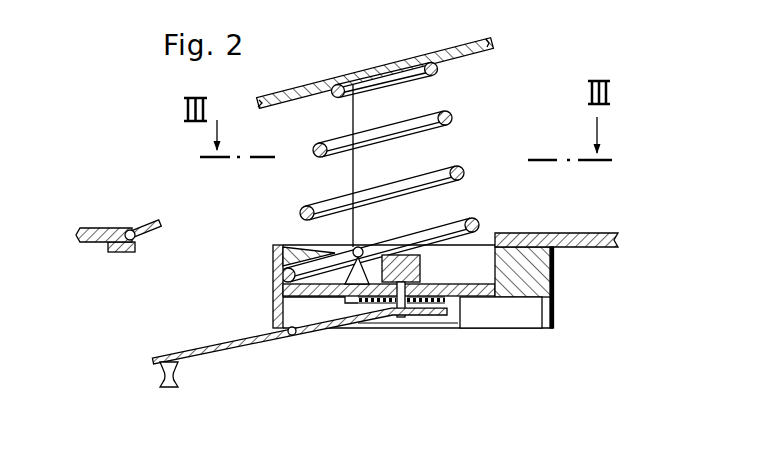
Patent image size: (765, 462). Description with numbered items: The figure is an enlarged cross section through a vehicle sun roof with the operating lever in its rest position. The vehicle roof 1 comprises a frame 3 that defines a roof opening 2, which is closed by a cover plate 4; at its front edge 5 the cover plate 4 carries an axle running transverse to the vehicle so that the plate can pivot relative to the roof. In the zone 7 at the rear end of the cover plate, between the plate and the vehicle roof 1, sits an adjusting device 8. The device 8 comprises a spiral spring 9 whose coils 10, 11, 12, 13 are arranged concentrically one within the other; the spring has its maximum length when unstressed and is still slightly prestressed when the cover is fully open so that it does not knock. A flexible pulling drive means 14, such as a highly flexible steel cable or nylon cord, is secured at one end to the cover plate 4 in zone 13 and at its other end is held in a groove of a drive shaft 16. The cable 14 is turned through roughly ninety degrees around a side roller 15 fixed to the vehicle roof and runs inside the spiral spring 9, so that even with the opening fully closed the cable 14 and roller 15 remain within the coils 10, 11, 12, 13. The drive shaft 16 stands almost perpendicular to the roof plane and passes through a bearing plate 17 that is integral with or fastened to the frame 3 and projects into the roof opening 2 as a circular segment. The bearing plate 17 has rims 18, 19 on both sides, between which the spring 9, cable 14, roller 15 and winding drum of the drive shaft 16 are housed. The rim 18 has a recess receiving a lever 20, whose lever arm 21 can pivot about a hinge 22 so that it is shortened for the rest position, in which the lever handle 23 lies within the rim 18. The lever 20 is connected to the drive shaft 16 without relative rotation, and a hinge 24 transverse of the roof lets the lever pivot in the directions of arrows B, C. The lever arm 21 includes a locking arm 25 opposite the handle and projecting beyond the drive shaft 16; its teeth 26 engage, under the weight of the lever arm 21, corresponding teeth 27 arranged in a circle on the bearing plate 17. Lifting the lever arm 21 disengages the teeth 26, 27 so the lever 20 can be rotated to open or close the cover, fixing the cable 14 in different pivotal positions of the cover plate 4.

The vehicle roof 1 is at (92, 243).
The roof opening 2 is at (303, 122).
The frame 3 is at (120, 253).
The cover plate 4 is at (148, 237).
The front edge 5 is at (137, 213).
The zone of the rear end of the cover plate 7 is at (436, 80).
The adjusting device 8 is at (255, 285).
The spiral spring 9 is at (436, 201).
The coil 10 is at (275, 247).
The coil 11 is at (302, 214).
The coil 12 is at (318, 153).
The coil 13 is at (412, 72).
The flexible pulling drive means 14 is at (354, 167).
The side roller 15 is at (361, 248).
The drive shaft 16 is at (420, 268).
The bearing plate 17 is at (283, 300).
The rim 18 is at (553, 329).
The rim 19 is at (283, 270).
The lever 20 is at (233, 357).
The lever arm 21 is at (257, 347).
The hinge 22 is at (292, 336).
The lever handle 23 is at (170, 392).
The hinge 24 is at (392, 304).
The locking arm 25 is at (427, 318).
The teeth 26 is at (460, 312).
The teeth 27 is at (382, 308).
The arrow B is at (139, 357).
The arrow C is at (462, 311).